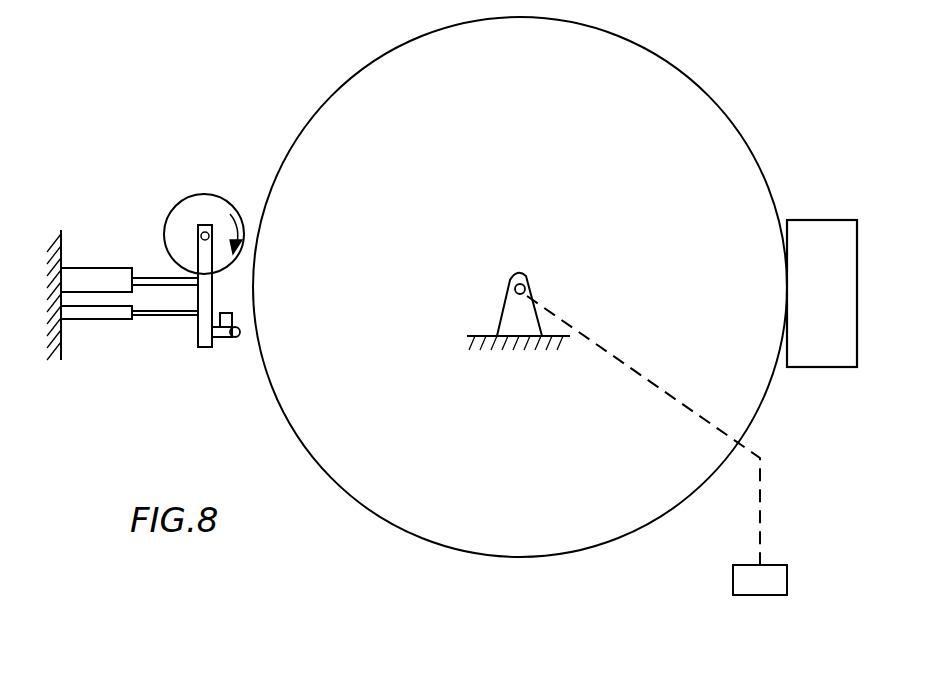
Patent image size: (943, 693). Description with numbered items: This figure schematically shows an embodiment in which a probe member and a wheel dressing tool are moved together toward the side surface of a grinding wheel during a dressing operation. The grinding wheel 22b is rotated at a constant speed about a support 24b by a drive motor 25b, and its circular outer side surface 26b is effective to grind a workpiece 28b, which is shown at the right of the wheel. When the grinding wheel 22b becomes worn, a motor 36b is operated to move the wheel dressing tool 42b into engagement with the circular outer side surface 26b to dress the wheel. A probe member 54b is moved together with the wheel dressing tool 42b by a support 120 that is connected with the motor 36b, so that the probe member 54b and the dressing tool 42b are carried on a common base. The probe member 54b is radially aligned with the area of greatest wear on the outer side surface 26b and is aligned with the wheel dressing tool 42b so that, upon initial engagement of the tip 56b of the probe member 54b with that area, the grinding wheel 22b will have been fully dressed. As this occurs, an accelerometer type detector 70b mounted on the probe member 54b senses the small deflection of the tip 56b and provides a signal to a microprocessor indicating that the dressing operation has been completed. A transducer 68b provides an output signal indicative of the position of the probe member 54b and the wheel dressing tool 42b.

The grinding wheel 22b is at (684, 78).
The circular outer side surface 26b is at (363, 72).
The support 24b is at (526, 286).
The drive motor 25b is at (752, 582).
The workpiece 28b is at (808, 266).
The motor 36b is at (96, 278).
The transducer 68b is at (88, 312).
The wheel dressing tool 42b is at (203, 208).
The accelerometer type detector 70b is at (214, 290).
The probe member 54b is at (225, 338).
The tip 56b is at (345, 460).
The support 120 is at (198, 334).